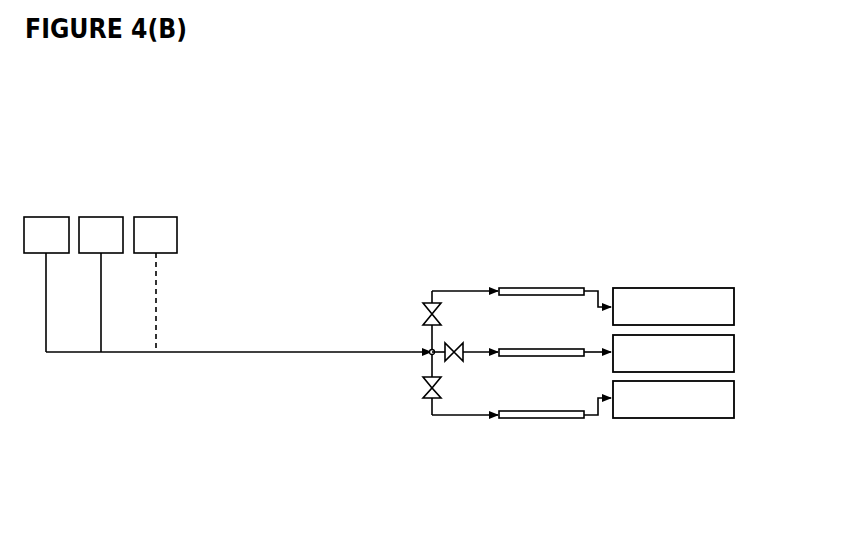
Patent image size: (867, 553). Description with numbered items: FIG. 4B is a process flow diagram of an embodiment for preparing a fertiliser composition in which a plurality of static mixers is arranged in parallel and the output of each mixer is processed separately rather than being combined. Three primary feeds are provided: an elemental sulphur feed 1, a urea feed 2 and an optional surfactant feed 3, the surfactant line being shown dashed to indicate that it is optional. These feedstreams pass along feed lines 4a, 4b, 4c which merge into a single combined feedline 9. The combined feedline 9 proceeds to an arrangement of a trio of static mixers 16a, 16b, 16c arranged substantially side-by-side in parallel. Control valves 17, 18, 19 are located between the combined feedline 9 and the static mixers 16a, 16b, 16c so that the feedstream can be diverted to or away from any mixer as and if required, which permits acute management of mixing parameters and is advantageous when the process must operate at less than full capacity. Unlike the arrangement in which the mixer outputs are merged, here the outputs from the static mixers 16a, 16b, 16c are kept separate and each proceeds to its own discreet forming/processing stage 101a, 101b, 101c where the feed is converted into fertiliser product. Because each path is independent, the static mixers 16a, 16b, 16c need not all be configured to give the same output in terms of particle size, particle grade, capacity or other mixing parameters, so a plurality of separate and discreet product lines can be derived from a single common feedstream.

The elemental sulphur feed 1 is at (46, 235).
The urea feed 2 is at (101, 235).
The surfactant feed 3 is at (155, 235).
The feed line 4a is at (60, 302).
The feed line 4b is at (122, 302).
The feed line 4c is at (185, 302).
The combined feedline 9 is at (238, 365).
The control valve 17 is at (541, 319).
The control valve 18 is at (541, 365).
The control valve 19 is at (541, 427).
The static mixer 16a is at (636, 295).
The static mixer 16b is at (636, 364).
The static mixer 16c is at (636, 427).
The forming/processing stage 101a is at (673, 306).
The forming/processing stage 101b is at (673, 353).
The forming/processing stage 101c is at (673, 399).